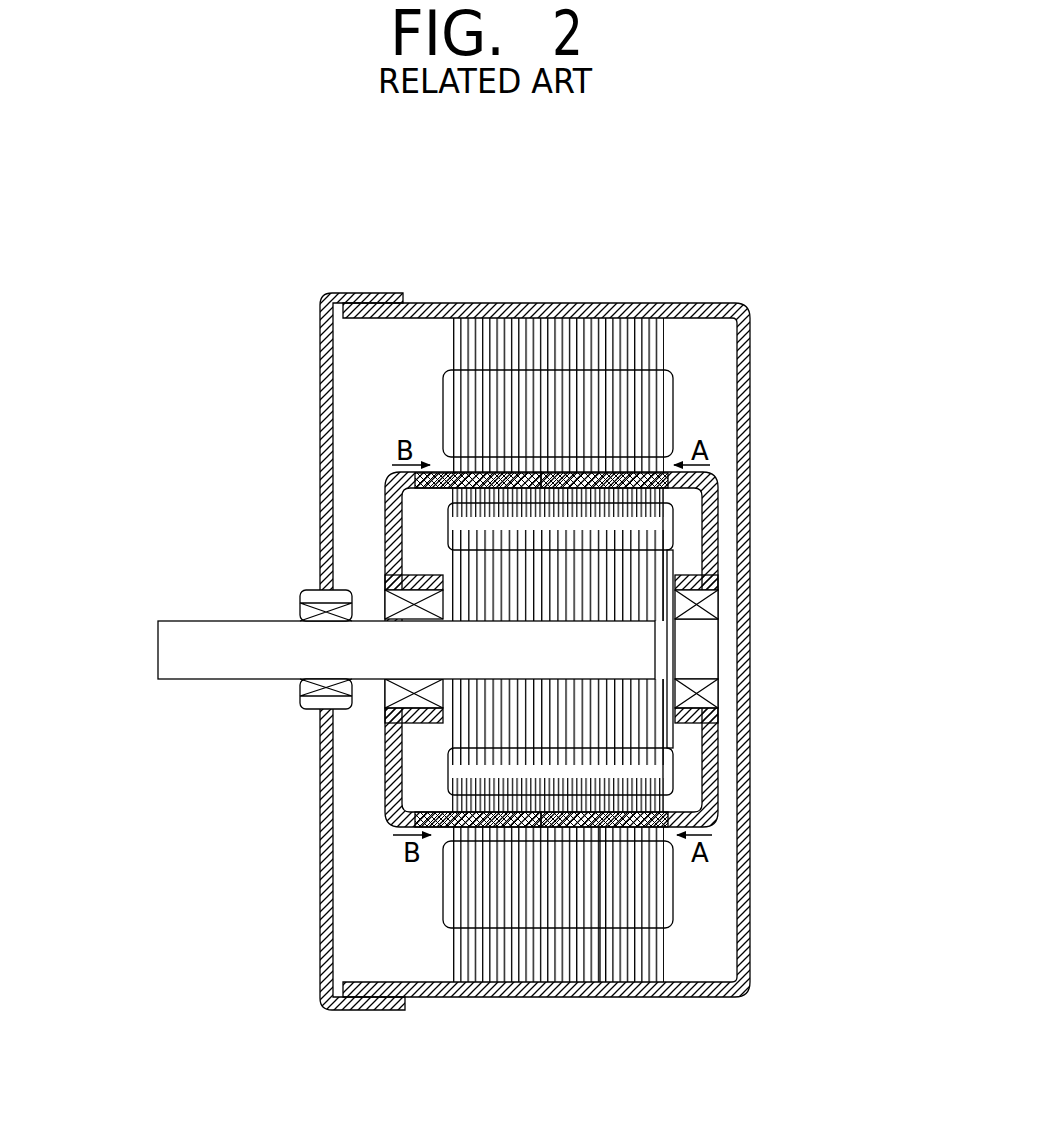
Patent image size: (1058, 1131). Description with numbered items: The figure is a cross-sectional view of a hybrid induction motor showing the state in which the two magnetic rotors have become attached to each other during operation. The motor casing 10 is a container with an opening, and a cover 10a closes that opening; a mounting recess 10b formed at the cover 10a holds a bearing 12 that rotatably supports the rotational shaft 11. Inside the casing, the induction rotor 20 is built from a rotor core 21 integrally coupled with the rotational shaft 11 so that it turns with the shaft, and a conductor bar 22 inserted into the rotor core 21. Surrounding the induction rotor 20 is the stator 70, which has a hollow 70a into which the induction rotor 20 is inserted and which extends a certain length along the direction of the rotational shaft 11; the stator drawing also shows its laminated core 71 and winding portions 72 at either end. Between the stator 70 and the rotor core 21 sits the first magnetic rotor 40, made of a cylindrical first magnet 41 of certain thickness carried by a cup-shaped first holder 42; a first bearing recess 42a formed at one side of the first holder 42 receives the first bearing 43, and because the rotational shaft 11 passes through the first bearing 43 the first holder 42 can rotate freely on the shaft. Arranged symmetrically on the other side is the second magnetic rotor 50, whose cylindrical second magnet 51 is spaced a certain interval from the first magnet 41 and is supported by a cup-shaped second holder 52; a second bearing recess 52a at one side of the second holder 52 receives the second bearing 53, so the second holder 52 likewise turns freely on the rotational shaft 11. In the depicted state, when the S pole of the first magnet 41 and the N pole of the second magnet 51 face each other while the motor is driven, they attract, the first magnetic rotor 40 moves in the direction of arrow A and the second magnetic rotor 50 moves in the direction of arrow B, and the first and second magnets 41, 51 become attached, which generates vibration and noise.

The motor casing 10 is at (314, 386).
The cover 10a is at (328, 470).
The mounting recess 10b is at (300, 687).
The rotational shaft 11 is at (177, 641).
The bearing 12 is at (302, 608).
The induction rotor 20 is at (675, 650).
The rotor core 21 is at (643, 600).
The conductor bar 22 is at (640, 522).
The first magnetic rotor 40 is at (666, 661).
The first magnet 41 is at (705, 822).
The first holder 42 is at (712, 765).
The first bearing recess 42a is at (796, 680).
The first bearing 43 is at (708, 692).
The second magnetic rotor 50 is at (424, 678).
The second magnet 51 is at (415, 823).
The second holder 52 is at (393, 777).
The second bearing recess 52a is at (393, 607).
The second bearing 53 is at (390, 703).
The stator 70 is at (673, 695).
The hollow 70a is at (604, 930).
The outer stator core 71 is at (678, 958).
The outer stator coil 72 is at (685, 913).